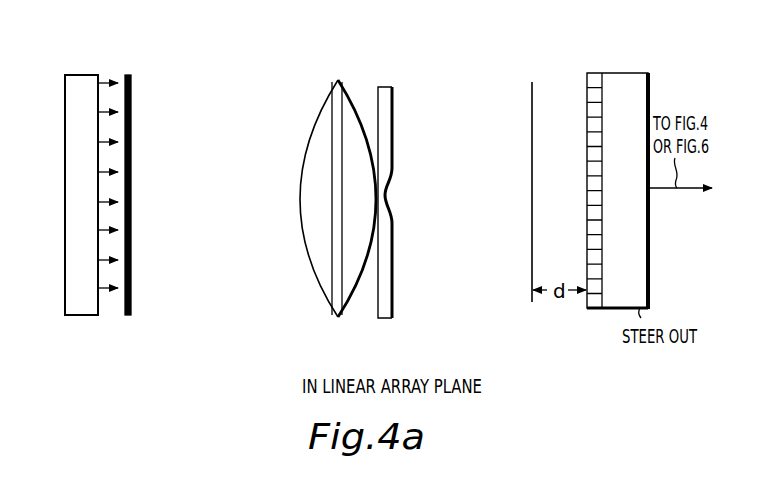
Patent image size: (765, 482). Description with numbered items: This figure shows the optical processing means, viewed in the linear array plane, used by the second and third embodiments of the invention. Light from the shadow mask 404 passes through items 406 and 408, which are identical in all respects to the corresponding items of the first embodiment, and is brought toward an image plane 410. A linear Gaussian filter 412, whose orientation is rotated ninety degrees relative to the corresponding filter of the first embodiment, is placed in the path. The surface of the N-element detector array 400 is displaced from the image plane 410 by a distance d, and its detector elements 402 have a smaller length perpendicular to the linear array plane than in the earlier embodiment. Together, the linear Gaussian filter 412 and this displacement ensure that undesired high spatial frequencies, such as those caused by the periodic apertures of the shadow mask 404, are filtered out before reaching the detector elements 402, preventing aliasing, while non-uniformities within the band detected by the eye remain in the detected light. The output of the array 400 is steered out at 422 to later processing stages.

The N-element detector array 400 is at (635, 174).
The detector elements 402 is at (594, 308).
The shadow mask 404 is at (132, 290).
The item 406 (identical to item 306 of the first embodiment) 406 is at (77, 75).
The item 408 (identical to item 308 of the first embodiment) 408 is at (333, 85).
The image plane 410 is at (532, 258).
The linear Gaussian filter 412 is at (391, 87).
The detector array output / steer out edge 422 is at (648, 273).